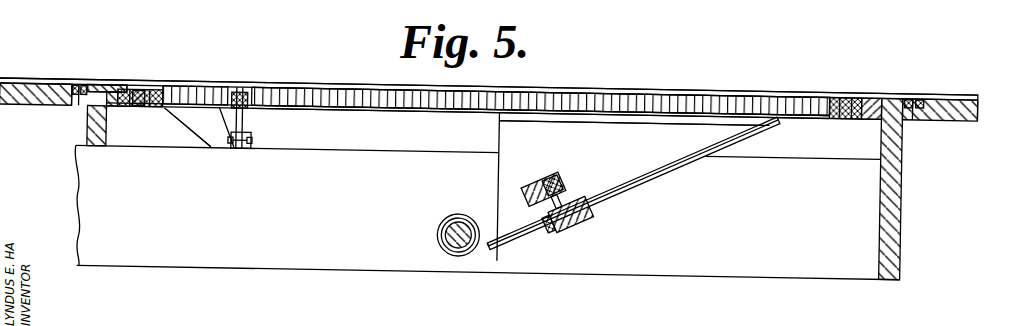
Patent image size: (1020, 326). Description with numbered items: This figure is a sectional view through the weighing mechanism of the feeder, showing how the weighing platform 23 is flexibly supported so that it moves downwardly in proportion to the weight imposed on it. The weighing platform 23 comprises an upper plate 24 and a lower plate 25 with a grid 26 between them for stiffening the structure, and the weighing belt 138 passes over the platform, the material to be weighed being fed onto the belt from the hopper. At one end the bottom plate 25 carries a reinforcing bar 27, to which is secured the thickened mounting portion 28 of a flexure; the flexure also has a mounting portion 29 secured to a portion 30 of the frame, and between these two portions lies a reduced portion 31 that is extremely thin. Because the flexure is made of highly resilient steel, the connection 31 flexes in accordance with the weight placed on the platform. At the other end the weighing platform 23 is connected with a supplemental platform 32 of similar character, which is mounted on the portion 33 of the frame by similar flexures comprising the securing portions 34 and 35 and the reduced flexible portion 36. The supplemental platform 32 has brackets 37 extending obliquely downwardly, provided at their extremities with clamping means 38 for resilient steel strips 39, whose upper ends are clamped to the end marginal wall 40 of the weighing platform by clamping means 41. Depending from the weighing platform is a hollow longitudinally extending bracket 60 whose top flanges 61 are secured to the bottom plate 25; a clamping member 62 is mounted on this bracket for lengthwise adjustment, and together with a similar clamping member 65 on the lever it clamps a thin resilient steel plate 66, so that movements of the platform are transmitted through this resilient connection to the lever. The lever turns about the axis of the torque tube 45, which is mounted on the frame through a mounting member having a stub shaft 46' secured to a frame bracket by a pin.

The weighing platform 23 is at (549, 67).
The upper plate 24 is at (673, 81).
The lower plate 25 is at (436, 104).
The grid 26 is at (603, 86).
The reinforcing bar 27 is at (853, 104).
The mounting portion 28 is at (853, 83).
The mounting portion 29 is at (908, 83).
The frame portion 30 is at (944, 100).
The reduced portion 31 is at (879, 82).
The supplemental platform 32 is at (200, 92).
The frame portion 33 is at (44, 101).
The securing portion 34 is at (140, 86).
The securing portion 35 is at (79, 103).
The reduced flexible portion 36 is at (113, 83).
The bracket 37 is at (214, 133).
The clamping means 38 is at (247, 143).
The resilient steel strip 39 is at (252, 125).
The end marginal wall 40 is at (250, 84).
The clamping means 41 is at (245, 108).
The torque tube 45 is at (443, 242).
The stub shaft 46' is at (464, 215).
The bracket 60 is at (657, 157).
The top flanges 61 is at (630, 112).
The clamping member 62 is at (593, 215).
The clamping member 65 is at (546, 166).
The resilient steel plate 66 is at (562, 195).
The weighing belt 138 is at (773, 78).